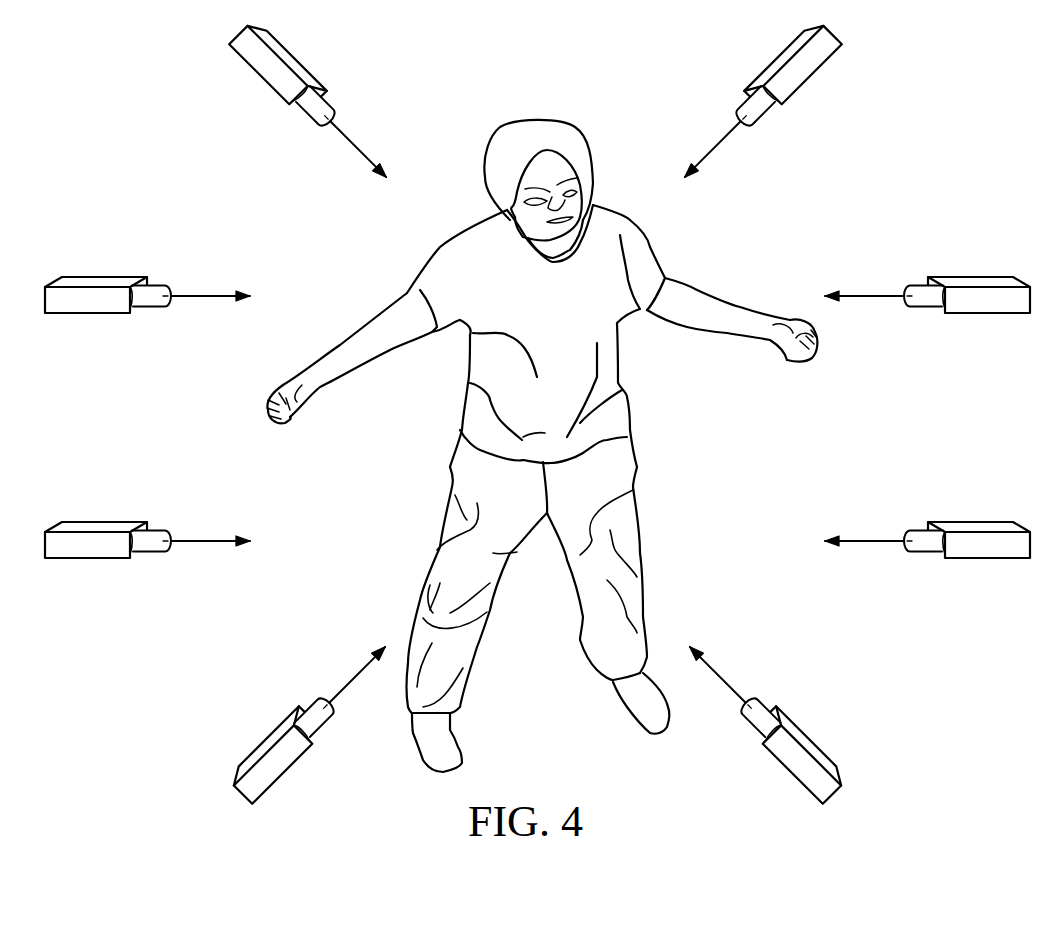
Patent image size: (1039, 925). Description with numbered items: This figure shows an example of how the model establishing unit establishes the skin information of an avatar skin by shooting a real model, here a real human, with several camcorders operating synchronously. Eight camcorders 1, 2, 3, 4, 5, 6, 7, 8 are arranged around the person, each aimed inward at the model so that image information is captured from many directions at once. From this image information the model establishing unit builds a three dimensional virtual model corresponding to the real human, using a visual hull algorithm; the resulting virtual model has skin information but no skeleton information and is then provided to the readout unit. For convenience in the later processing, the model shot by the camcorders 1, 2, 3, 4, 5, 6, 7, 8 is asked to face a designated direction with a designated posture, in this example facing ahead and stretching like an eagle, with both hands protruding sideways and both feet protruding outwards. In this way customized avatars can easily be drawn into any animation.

The camcorder 1 is at (814, 78).
The camcorder 2 is at (985, 314).
The camcorder 3 is at (985, 559).
The camcorder 4 is at (817, 744).
The camcorder 5 is at (256, 744).
The camcorder 6 is at (88, 559).
The camcorder 7 is at (88, 314).
The camcorder 8 is at (262, 78).